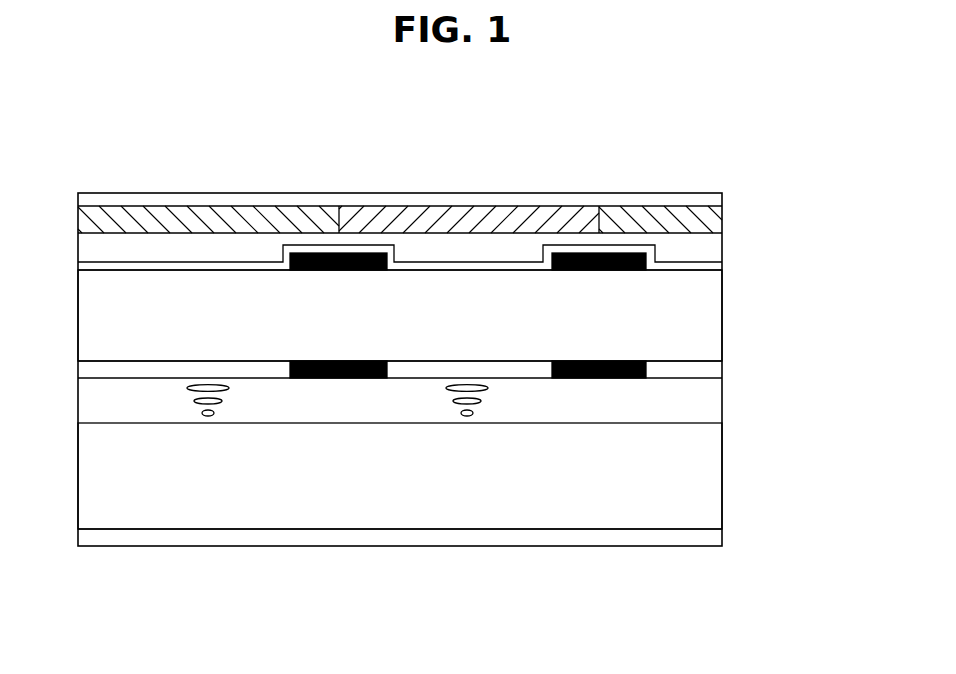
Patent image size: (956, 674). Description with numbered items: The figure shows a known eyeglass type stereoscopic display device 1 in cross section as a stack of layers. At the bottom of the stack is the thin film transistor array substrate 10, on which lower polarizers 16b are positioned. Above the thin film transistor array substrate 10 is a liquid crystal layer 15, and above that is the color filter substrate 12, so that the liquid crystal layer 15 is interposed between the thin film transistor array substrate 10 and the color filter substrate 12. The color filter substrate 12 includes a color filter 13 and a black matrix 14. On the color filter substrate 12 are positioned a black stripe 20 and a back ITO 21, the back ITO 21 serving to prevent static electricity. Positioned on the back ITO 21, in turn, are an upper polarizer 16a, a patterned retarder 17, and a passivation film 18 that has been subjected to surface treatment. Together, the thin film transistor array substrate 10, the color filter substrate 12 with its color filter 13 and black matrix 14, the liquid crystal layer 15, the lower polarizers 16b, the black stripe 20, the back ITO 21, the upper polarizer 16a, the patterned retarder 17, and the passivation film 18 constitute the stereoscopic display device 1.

The eyeglass type stereoscopic display device 1 is at (117, 146).
The thin film transistor array substrate 10 is at (712, 474).
The color filter substrate 12 is at (712, 304).
The color filter 13 is at (712, 371).
The black matrix 14 is at (600, 378).
The liquid crystal layer 15 is at (467, 416).
The upper polarizer 16a is at (712, 248).
The lower polarizers 16b is at (712, 539).
The patterned retarder 17 is at (712, 221).
The passivation film 18 is at (712, 198).
The black stripe 20 is at (367, 253).
The back ITO 21 is at (712, 268).